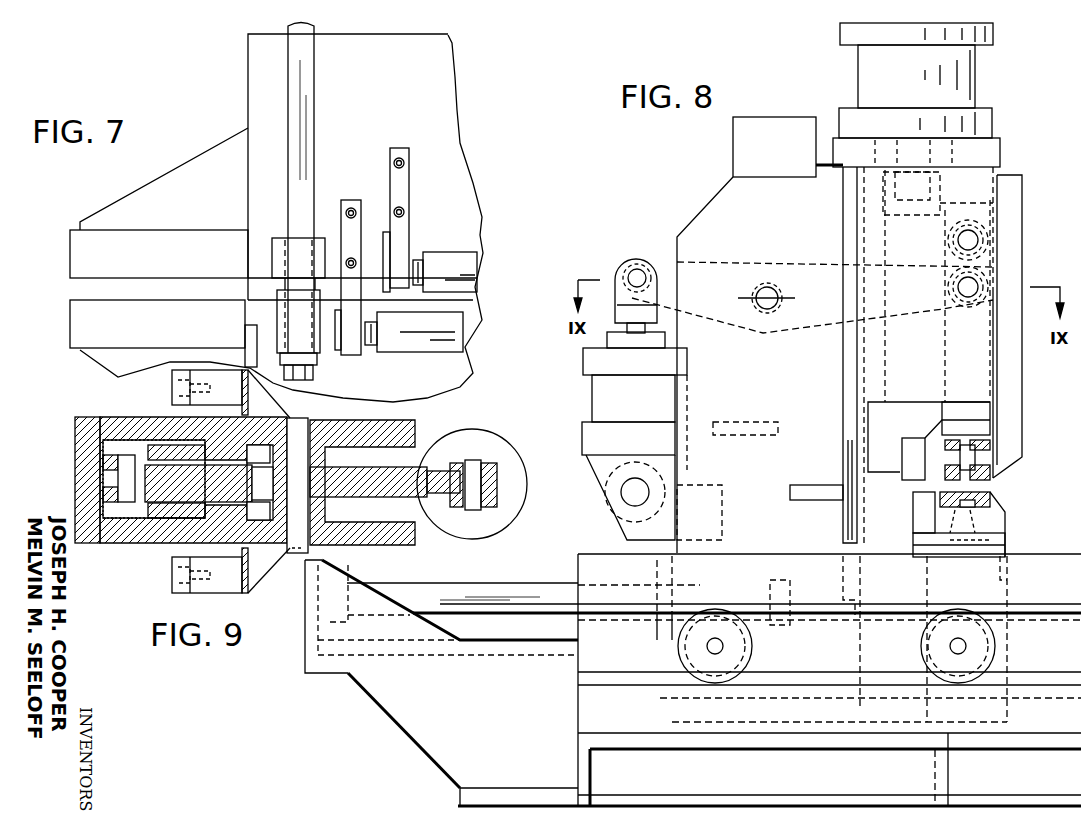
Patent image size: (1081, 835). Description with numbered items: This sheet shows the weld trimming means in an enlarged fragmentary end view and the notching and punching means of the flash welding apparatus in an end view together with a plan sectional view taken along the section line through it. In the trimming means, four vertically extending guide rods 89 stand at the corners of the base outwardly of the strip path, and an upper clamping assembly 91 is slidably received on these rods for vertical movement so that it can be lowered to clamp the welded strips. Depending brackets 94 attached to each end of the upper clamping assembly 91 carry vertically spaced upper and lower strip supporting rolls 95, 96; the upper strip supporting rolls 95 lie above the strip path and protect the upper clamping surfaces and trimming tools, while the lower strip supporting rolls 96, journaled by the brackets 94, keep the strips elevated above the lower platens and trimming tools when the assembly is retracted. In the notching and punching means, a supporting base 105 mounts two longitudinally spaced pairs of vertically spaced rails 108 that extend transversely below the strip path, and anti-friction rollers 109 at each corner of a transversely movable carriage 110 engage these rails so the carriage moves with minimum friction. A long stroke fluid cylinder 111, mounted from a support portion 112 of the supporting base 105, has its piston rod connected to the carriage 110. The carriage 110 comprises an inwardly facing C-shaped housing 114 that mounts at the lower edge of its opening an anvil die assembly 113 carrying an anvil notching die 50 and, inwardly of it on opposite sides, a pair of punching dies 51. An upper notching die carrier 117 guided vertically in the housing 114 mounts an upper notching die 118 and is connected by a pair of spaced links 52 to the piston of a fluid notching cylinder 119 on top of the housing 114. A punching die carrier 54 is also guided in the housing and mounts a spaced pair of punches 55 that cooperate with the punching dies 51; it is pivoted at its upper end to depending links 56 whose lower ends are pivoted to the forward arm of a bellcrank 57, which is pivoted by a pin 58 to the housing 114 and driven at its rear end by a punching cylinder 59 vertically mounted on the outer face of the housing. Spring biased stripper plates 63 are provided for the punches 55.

In FIG. 8, the anvil notching die 50 is at (920, 517).
In FIG. 8, the punching dies 51 is at (985, 493).
In FIG. 9, the links 52 is at (170, 445).
In FIG. 8, the links 52 is at (960, 285).
In FIG. 8, the punching die carrier 54 is at (978, 425).
In FIG. 8, the punches 55 is at (965, 458).
In FIG. 9, the depending links 56 is at (100, 460).
In FIG. 8, the depending links 56 is at (985, 248).
In FIG. 9, the bellcrank 57 is at (205, 500).
In FIG. 8, the bellcrank 57 is at (668, 265).
In FIG. 9, the pin 58 is at (297, 555).
In FIG. 8, the pin 58 is at (765, 288).
In FIG. 9, the punching cylinder 59 is at (448, 528).
In FIG. 8, the punching cylinder 59 is at (595, 405).
In FIG. 8, the spring biased stripper plates 63 is at (990, 475).
In FIG. 7, the guide rods 89 is at (303, 72).
In FIG. 7, the upper clamping assembly 91 is at (260, 95).
In FIG. 7, the depending brackets 94 is at (350, 207).
In FIG. 7, the upper strip supporting rolls 95 is at (437, 263).
In FIG. 7, the lower strip supporting rolls 96 is at (403, 337).
In FIG. 8, the supporting base 105 is at (583, 740).
In FIG. 8, the rails 108 is at (607, 570).
In FIG. 8, the anti-friction rollers 109 is at (690, 645).
In FIG. 8, the carriages 110 is at (747, 639).
In FIG. 8, the fluid cylinders 111 is at (476, 592).
In FIG. 8, the support portions 112 is at (395, 713).
In FIG. 8, the anvil die assembly 113 is at (995, 528).
In FIG. 9, the C-shaped housing 114 is at (272, 432).
In FIG. 8, the C-shaped housing 114 is at (707, 212).
In FIG. 8, the upper notching die carrier 117 is at (890, 437).
In FIG. 8, the upper notching die 118 is at (908, 462).
In FIG. 8, the fluid notching cylinder 119 is at (975, 123).